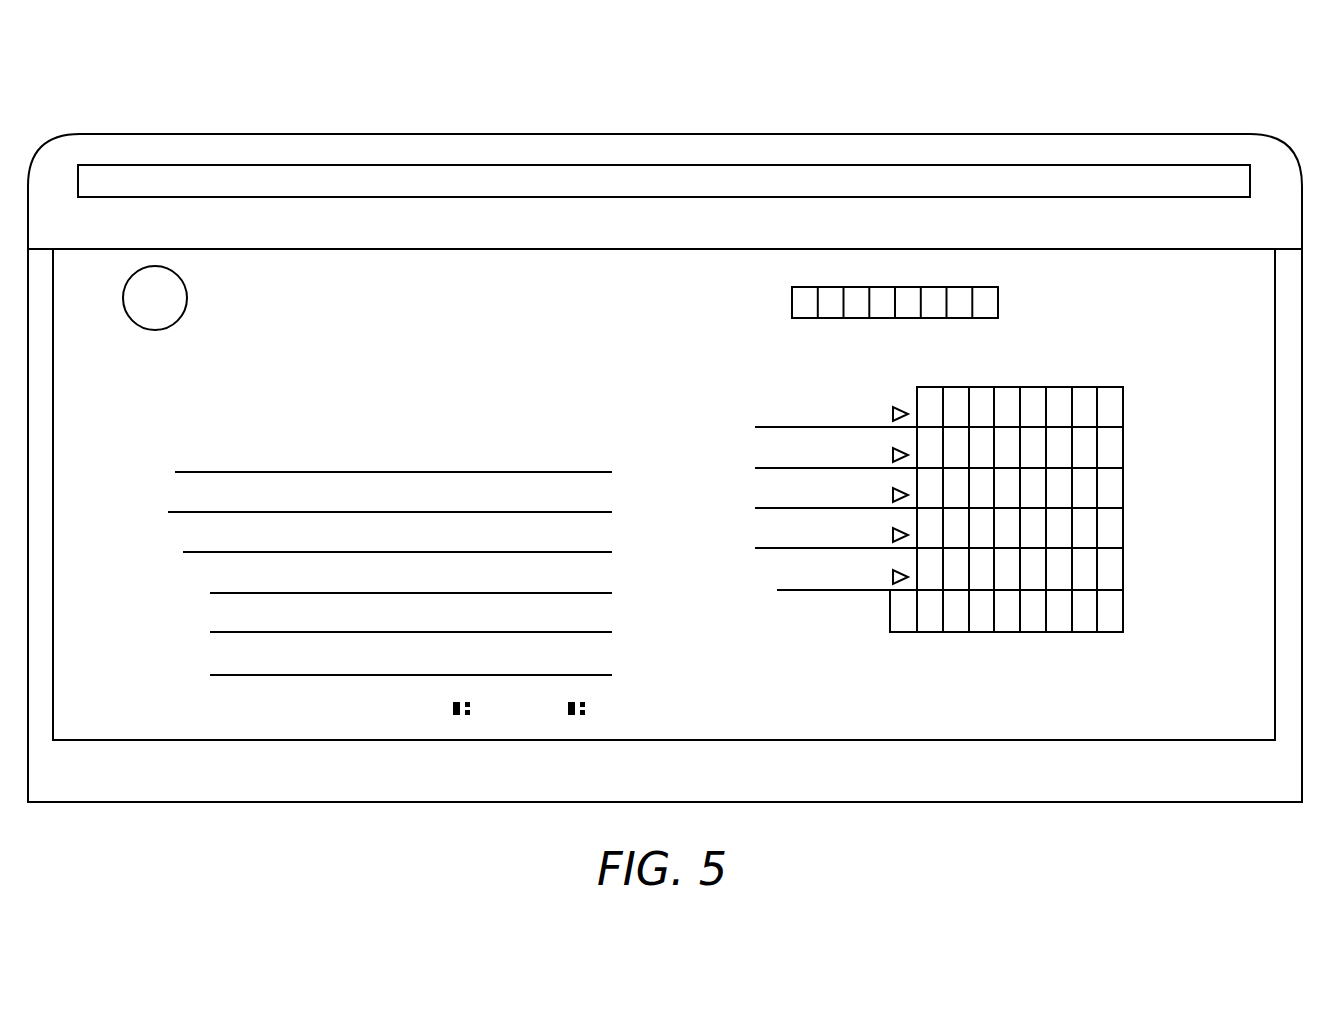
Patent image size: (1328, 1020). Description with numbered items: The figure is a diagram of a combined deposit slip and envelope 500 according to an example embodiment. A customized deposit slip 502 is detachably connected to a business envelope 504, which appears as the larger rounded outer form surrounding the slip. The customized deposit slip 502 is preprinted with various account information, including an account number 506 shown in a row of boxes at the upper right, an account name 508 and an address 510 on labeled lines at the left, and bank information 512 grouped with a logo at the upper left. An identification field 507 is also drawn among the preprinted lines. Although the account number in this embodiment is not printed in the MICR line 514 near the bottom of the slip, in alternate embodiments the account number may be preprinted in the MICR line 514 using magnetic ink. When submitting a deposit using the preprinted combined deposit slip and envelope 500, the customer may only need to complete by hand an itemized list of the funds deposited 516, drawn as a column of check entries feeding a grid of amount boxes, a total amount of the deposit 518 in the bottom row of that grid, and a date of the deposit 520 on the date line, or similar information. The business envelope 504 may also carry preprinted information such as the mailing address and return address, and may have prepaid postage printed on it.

The combined deposit slip and envelope 500 is at (1250, 93).
The customized deposit slip 502 is at (197, 740).
The business envelope 504 is at (100, 802).
The account number 506 is at (667, 291).
The ID number field 507 is at (128, 500).
The account name 508 is at (128, 538).
The address 510 is at (128, 580).
The bank information 512 is at (417, 338).
The MICR line 514 is at (592, 687).
The itemized list of the funds deposited 516 is at (1135, 387).
The total amount of the deposit 518 is at (1135, 590).
The date of the deposit 520 is at (128, 456).